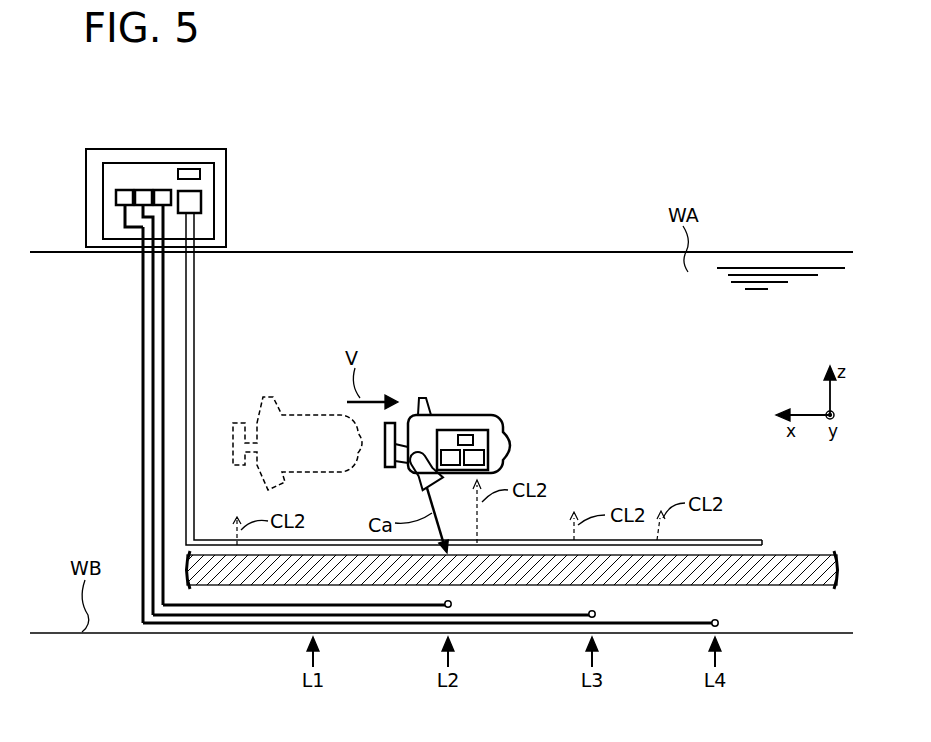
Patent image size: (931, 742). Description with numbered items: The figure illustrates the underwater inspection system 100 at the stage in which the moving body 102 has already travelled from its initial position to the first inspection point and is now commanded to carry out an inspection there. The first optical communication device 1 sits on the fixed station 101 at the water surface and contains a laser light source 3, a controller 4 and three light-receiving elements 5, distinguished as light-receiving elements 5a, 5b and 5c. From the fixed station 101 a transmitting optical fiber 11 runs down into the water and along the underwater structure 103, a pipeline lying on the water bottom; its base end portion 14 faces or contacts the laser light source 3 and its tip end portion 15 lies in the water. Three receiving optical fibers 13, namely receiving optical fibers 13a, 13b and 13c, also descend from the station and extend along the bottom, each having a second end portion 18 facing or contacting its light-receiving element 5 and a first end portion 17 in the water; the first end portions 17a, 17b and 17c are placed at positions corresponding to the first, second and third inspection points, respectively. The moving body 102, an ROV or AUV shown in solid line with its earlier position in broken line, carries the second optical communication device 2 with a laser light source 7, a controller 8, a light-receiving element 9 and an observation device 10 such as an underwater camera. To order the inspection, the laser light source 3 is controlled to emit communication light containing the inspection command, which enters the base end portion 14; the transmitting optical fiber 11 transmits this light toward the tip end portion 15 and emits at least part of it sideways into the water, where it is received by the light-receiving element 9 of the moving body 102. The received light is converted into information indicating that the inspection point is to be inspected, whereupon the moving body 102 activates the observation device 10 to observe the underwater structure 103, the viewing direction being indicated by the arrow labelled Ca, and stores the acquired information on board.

The first optical communication device 1 is at (216, 190).
The second optical communication device 2 is at (445, 430).
The laser light source 3 is at (197, 205).
The controller 4 is at (200, 174).
The light-receiving elements 5 is at (172, 107).
The light-receiving element 5a is at (163, 190).
The light-receiving element 5b is at (142, 190).
The light-receiving element 5c is at (122, 190).
The laser light source 7 is at (450, 450).
The controller 8 is at (465, 435).
The light-receiving element 9 is at (476, 450).
The observation device 10 is at (414, 483).
The transmitting optical fiber 11 is at (194, 345).
The receiving optical fibers 13 is at (76, 378).
The receiving optical fiber 13a is at (163, 452).
The receiving optical fiber 13b is at (153, 425).
The receiving optical fiber 13c is at (143, 405).
The base end portion 14 is at (193, 215).
The tip end portion 15 is at (757, 540).
The first end portion 17 is at (483, 605).
The first end portion 17a is at (452, 604).
The first end portion 17b is at (596, 614).
The first end portion 17c is at (719, 623).
The second end portion 18 is at (125, 206).
The underwater inspection system 100 is at (608, 347).
The fixed station 101 is at (222, 134).
The moving body 102 is at (518, 405).
The underwater structure 103 is at (823, 555).